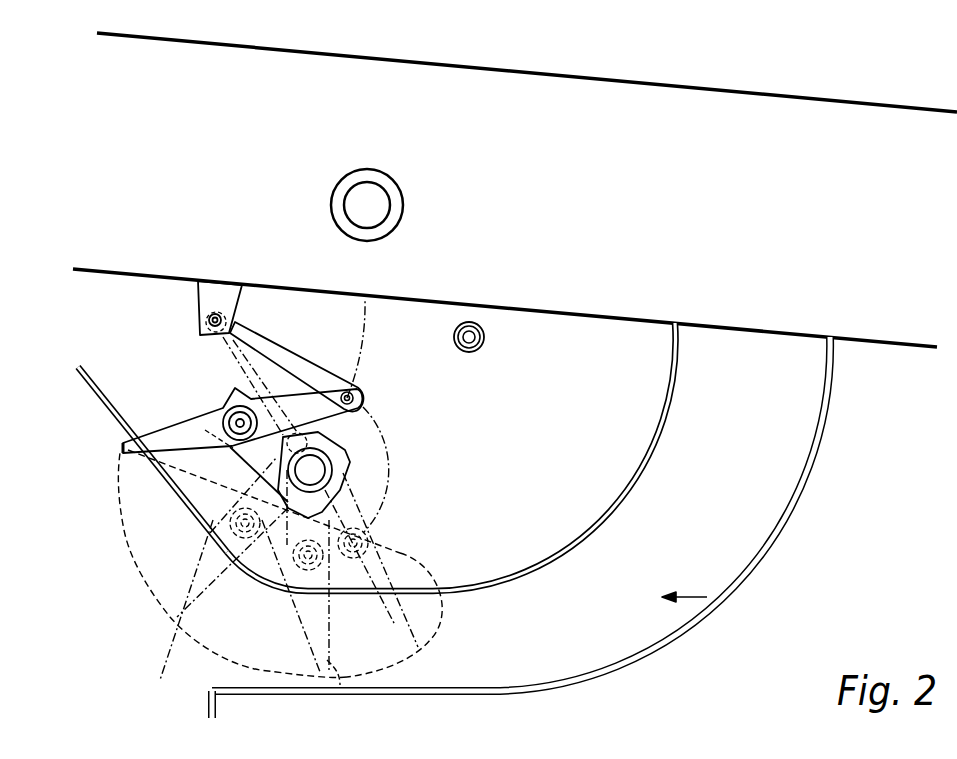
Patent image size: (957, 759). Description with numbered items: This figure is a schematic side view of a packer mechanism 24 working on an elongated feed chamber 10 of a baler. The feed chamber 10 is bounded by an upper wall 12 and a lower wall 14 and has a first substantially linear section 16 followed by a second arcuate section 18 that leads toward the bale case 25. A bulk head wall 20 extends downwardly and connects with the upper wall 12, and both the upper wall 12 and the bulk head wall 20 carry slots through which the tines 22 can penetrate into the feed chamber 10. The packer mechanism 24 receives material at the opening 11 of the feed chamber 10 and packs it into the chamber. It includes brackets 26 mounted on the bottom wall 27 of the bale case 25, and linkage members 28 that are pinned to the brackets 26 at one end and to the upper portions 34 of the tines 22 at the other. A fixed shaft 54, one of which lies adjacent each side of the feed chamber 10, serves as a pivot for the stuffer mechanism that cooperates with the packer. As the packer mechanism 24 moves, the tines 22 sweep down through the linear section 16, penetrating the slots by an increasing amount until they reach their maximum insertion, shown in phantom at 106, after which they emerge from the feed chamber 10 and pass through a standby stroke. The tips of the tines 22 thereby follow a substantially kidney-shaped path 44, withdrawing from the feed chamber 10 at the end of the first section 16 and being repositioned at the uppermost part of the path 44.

The feed chamber 10 is at (707, 597).
The opening 11 is at (193, 667).
The upper wall 12 is at (528, 557).
The lower wall 14 is at (478, 693).
The first substantially linear section 16 is at (258, 686).
The second arcuate section 18 is at (773, 480).
The bulk head wall 20 is at (108, 410).
The tines 22 is at (187, 427).
The packer mechanism 24 is at (363, 377).
The bale case 25 is at (738, 93).
The brackets 26 is at (210, 300).
The bottom wall 27 is at (538, 310).
The linkage members 28 is at (277, 358).
The upper portions 34 is at (335, 414).
The kidney-shaped path 44 is at (437, 625).
The fixed shafts 54 is at (484, 341).
The maximum insertion position 106 is at (340, 690).